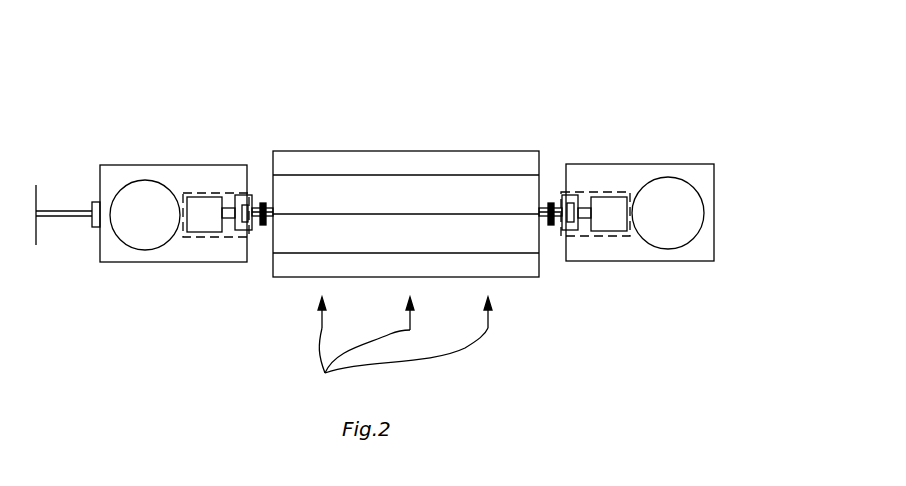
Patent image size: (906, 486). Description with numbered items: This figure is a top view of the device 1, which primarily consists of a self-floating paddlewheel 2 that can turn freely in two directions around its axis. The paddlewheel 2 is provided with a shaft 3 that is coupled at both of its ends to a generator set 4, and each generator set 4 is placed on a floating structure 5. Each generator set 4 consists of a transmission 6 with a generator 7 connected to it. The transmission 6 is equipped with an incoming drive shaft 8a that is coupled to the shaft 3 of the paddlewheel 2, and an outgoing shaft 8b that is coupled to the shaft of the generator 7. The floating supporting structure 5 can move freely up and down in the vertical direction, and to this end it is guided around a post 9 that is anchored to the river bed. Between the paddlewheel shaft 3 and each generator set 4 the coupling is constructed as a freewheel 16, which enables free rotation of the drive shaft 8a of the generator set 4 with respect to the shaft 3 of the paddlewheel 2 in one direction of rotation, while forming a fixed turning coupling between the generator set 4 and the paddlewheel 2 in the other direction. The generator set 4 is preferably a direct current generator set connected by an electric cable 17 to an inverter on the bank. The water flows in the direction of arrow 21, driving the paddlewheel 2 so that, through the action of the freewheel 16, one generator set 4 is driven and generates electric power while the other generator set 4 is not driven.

The device 1 is at (82, 37).
The paddlewheel 2 is at (393, 170).
The shaft 3 is at (276, 207).
The generator set 4 is at (203, 235).
The floating structure 5 is at (148, 252).
The transmission 6 is at (244, 200).
The generator 7 is at (195, 208).
The incoming drive shaft 8a is at (259, 222).
The outgoing shaft 8b is at (225, 218).
The post 9 is at (157, 193).
The freewheel 16 is at (241, 195).
The electric cable 17 is at (80, 217).
The arrow 21 is at (399, 348).